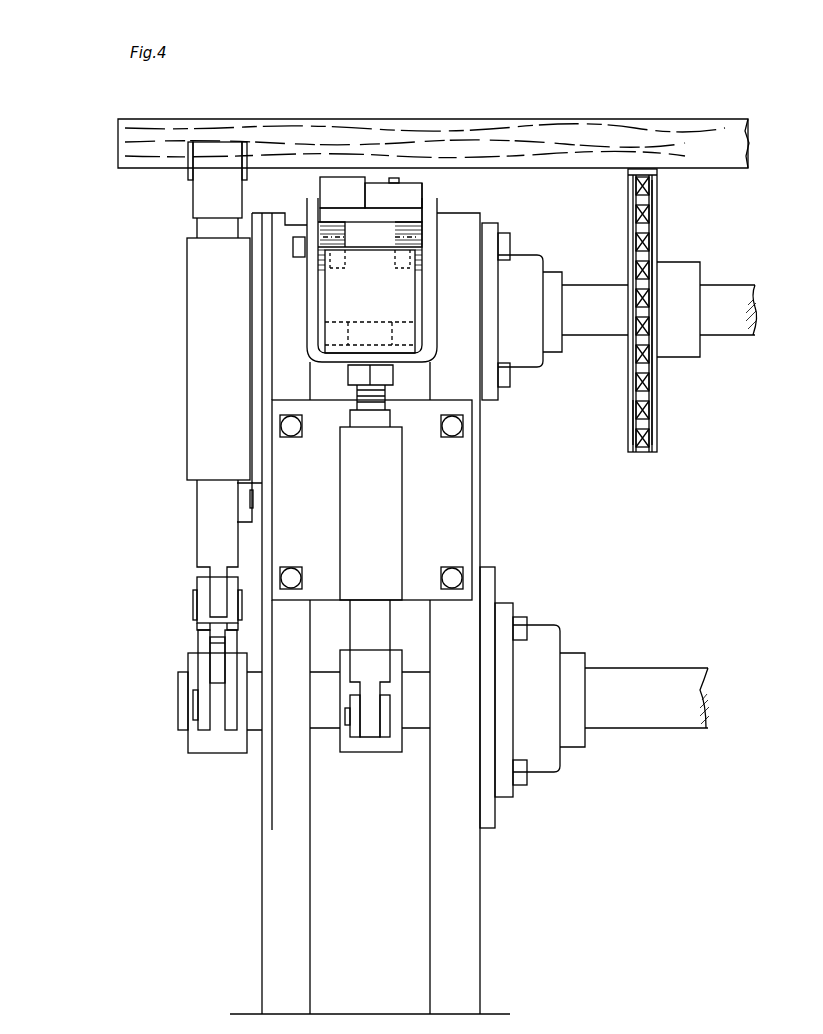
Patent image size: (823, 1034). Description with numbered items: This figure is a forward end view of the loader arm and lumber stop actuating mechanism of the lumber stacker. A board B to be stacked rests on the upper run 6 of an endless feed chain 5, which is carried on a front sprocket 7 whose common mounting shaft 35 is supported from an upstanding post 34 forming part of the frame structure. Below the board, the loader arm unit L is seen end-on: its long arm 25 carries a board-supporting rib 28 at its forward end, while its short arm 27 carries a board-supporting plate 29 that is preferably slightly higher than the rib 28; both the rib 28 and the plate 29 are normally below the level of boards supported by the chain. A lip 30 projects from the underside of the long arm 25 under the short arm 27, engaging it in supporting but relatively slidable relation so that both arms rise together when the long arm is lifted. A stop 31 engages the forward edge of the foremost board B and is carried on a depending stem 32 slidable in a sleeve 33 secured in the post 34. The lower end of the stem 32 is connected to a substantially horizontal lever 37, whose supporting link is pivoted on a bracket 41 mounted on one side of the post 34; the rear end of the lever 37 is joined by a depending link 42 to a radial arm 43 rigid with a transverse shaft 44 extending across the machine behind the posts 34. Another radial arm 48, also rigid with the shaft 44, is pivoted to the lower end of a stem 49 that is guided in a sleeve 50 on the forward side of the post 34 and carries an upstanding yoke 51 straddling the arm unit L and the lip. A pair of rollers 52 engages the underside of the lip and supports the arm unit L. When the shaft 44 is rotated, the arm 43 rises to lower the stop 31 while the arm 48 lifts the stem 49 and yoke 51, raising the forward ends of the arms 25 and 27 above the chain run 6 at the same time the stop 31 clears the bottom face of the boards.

The board B is at (576, 132).
The loader arm unit L is at (430, 196).
The endless feed chain 5 is at (638, 410).
The upper run 6 is at (643, 170).
The front sprocket 7 is at (660, 228).
The long arm 25 is at (415, 195).
The short arm 27 is at (355, 190).
The board-supporting rib 28 is at (395, 178).
The board-supporting plate 29 is at (328, 177).
The lip 30 is at (330, 218).
The stop 31 is at (190, 172).
The depending stem 32 is at (208, 502).
The sleeve 33 is at (200, 385).
The upstanding post 34 is at (482, 890).
The common mounting shaft 35 is at (583, 295).
The horizontal lever 37 is at (202, 603).
The bracket 41 is at (247, 501).
The depending link 42 is at (200, 680).
The radial arm 43 is at (218, 725).
The transverse shaft 44 is at (630, 685).
The radial arm 48 is at (357, 730).
The stem 49 is at (380, 630).
The sleeve 50 is at (388, 525).
The yoke 51 is at (432, 300).
The roller 52 is at (400, 235).